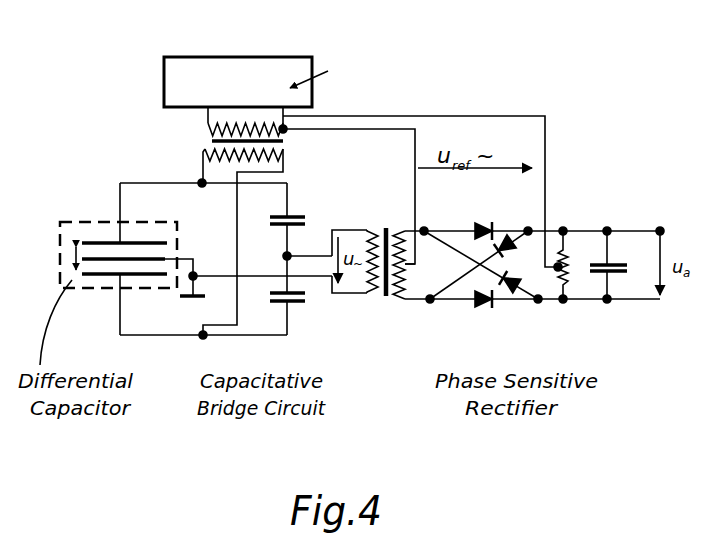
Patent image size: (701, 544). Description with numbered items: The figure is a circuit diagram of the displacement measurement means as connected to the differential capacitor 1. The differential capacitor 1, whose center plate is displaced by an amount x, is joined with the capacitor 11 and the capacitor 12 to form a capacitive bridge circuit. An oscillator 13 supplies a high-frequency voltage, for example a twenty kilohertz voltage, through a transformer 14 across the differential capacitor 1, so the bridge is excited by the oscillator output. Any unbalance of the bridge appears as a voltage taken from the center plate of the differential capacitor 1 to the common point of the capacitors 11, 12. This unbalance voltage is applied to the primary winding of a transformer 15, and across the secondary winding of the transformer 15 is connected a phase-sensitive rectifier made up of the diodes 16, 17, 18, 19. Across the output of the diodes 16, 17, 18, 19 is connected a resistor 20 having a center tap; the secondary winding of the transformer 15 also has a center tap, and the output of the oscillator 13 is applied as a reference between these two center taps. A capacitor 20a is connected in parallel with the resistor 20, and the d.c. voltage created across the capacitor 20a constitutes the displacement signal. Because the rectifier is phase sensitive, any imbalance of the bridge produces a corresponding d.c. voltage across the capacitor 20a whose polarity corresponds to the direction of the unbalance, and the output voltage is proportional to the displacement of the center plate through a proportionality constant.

The differential capacitor 1 is at (75, 240).
The capacitor 11 is at (290, 214).
The capacitor 12 is at (305, 302).
The oscillator 13 is at (252, 62).
The transformer 14 is at (196, 140).
The transformer 15 is at (384, 226).
The diode 16 is at (480, 226).
The diode 17 is at (506, 237).
The diode 18 is at (514, 290).
The diode 19 is at (474, 304).
The resistor 20 is at (569, 276).
The capacitor 20a is at (615, 273).